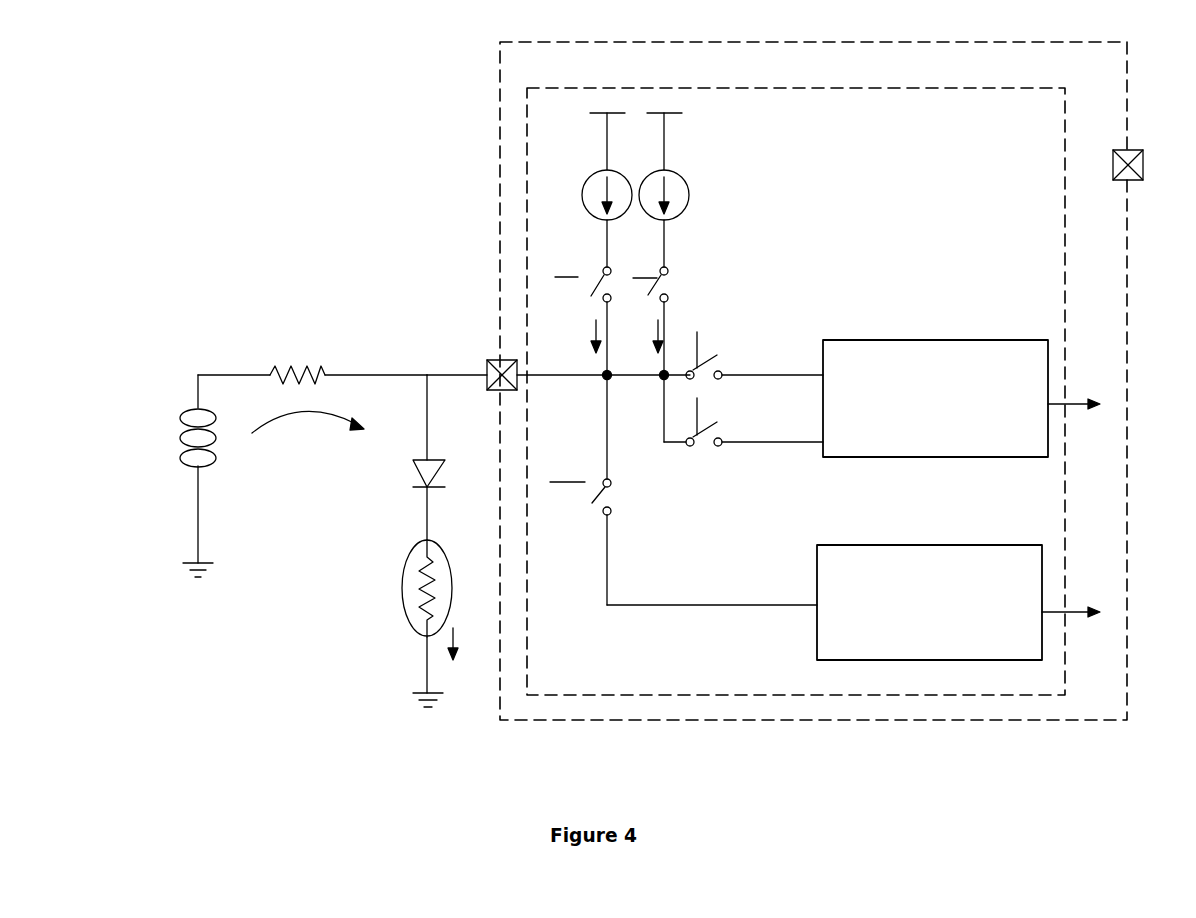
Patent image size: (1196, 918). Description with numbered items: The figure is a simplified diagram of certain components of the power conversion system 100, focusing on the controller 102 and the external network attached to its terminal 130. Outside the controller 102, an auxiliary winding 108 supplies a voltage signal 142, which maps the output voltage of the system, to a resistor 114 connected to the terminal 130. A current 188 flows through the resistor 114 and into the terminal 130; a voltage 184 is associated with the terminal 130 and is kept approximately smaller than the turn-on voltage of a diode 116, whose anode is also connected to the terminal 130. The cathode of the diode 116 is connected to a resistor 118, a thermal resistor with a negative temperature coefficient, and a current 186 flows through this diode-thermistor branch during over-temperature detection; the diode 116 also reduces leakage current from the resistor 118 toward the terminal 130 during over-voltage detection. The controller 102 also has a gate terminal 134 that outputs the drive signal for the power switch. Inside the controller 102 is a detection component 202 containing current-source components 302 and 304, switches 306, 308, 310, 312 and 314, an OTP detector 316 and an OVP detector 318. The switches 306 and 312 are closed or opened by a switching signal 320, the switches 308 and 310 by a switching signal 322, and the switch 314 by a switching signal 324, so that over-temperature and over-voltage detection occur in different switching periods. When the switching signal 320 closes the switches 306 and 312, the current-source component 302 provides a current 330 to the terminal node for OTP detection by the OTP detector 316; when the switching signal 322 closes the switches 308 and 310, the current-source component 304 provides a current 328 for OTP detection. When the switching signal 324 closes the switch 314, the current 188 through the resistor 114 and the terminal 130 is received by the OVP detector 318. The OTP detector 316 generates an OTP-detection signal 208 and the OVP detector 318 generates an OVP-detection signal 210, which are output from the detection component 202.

The power conversion system 100 is at (238, 748).
The controller 102 is at (500, 722).
The detection component 202 is at (1065, 88).
The terminal GATE 134 is at (1128, 150).
The voltage signal 142 is at (198, 392).
The auxiliary winding 108 is at (216, 466).
The resistor 114 is at (325, 372).
The current 188 is at (343, 414).
The voltage 184 is at (431, 380).
The terminal P1 130 is at (490, 391).
The diode 116 is at (418, 478).
The resistor 118 is at (403, 612).
The current 186 is at (475, 628).
The current-source component 302 is at (588, 182).
The current-source component 304 is at (688, 182).
The switch 306 is at (603, 268).
The switch 308 is at (668, 277).
The switch 310 is at (720, 370).
The switch 312 is at (700, 447).
The switch 314 is at (613, 505).
The switching signal 320 is at (564, 278).
The switching signal 322 is at (640, 278).
The switching signal 324 is at (564, 482).
The current 328 is at (658, 326).
The current 330 is at (596, 326).
The OTP detector 316 is at (870, 340).
The OVP detector 318 is at (870, 545).
The OTP-detection signal 208 is at (1086, 403).
The OVP-detection signal 210 is at (1086, 611).